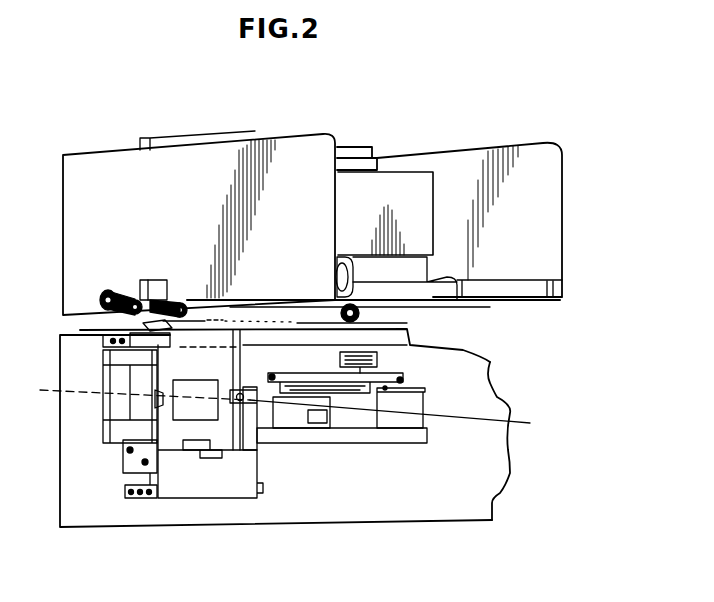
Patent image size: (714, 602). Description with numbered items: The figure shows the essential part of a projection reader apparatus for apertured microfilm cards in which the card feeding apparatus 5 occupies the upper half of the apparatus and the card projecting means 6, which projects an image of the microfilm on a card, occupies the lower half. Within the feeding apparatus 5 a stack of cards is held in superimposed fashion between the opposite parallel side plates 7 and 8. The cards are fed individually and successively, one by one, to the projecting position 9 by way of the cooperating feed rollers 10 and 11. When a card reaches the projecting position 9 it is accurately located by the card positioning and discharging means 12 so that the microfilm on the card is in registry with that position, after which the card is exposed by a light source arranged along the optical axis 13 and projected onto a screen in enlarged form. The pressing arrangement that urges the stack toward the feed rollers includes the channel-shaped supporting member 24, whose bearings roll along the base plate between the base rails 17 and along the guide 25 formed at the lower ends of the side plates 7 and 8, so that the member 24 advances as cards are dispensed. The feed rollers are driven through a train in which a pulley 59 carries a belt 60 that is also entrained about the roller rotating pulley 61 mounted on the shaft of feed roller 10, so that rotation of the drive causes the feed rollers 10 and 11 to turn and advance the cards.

The card feeding apparatus 5 is at (442, 132).
The card projecting means 6 is at (205, 500).
The side plate 7 is at (540, 160).
The side plate 8 is at (311, 153).
The projecting position 9 is at (183, 412).
The feed roller 10 is at (180, 300).
The feed roller 11 is at (360, 322).
The card positioning and discharging means 12 is at (285, 468).
The optical axis 13 is at (511, 425).
The base rails 17 is at (450, 288).
The supporting member 24 is at (418, 268).
The guide 25 is at (562, 291).
The pulley 59 is at (103, 293).
The belt 60 is at (115, 290).
The roller rotating pulley 61 is at (142, 280).